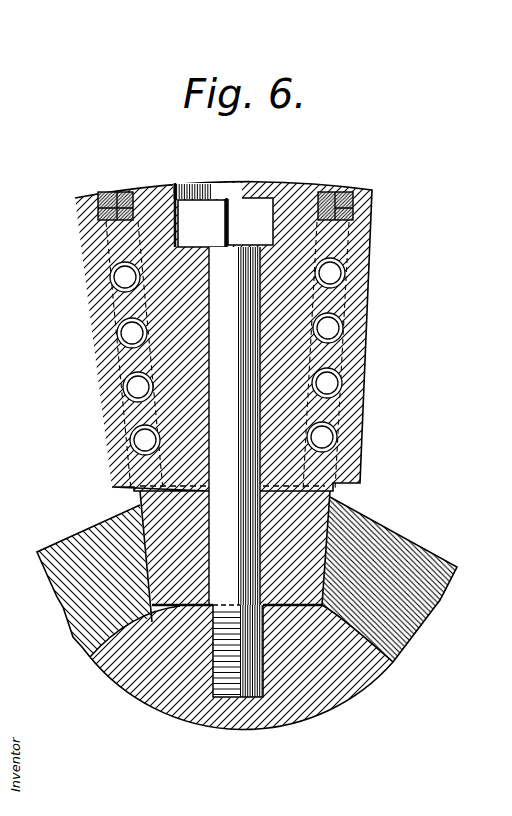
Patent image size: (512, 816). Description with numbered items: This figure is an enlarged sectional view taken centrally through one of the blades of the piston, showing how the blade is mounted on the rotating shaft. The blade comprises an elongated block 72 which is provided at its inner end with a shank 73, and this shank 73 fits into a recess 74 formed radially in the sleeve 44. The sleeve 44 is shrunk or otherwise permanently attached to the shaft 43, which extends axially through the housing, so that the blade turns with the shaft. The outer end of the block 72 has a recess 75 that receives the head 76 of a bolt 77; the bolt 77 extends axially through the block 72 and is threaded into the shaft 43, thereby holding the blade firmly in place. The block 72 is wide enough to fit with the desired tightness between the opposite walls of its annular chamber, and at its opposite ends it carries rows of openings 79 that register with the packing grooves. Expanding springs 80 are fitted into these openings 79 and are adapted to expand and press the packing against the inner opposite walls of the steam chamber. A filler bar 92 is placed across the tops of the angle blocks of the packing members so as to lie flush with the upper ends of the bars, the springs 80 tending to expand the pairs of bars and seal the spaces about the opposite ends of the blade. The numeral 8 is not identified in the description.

The die block 8 is at (117, 192).
The filler bar 92 is at (103, 196).
The expanding spring 80 is at (347, 266).
The openings 79 is at (328, 383).
The head 76 is at (200, 213).
The recess 75 is at (250, 190).
The bolt 77 is at (222, 358).
The block 72 is at (333, 492).
The shank 73 is at (137, 530).
The sleeve 44 is at (397, 533).
The shaft 43 is at (367, 668).
The recess 74 is at (308, 608).